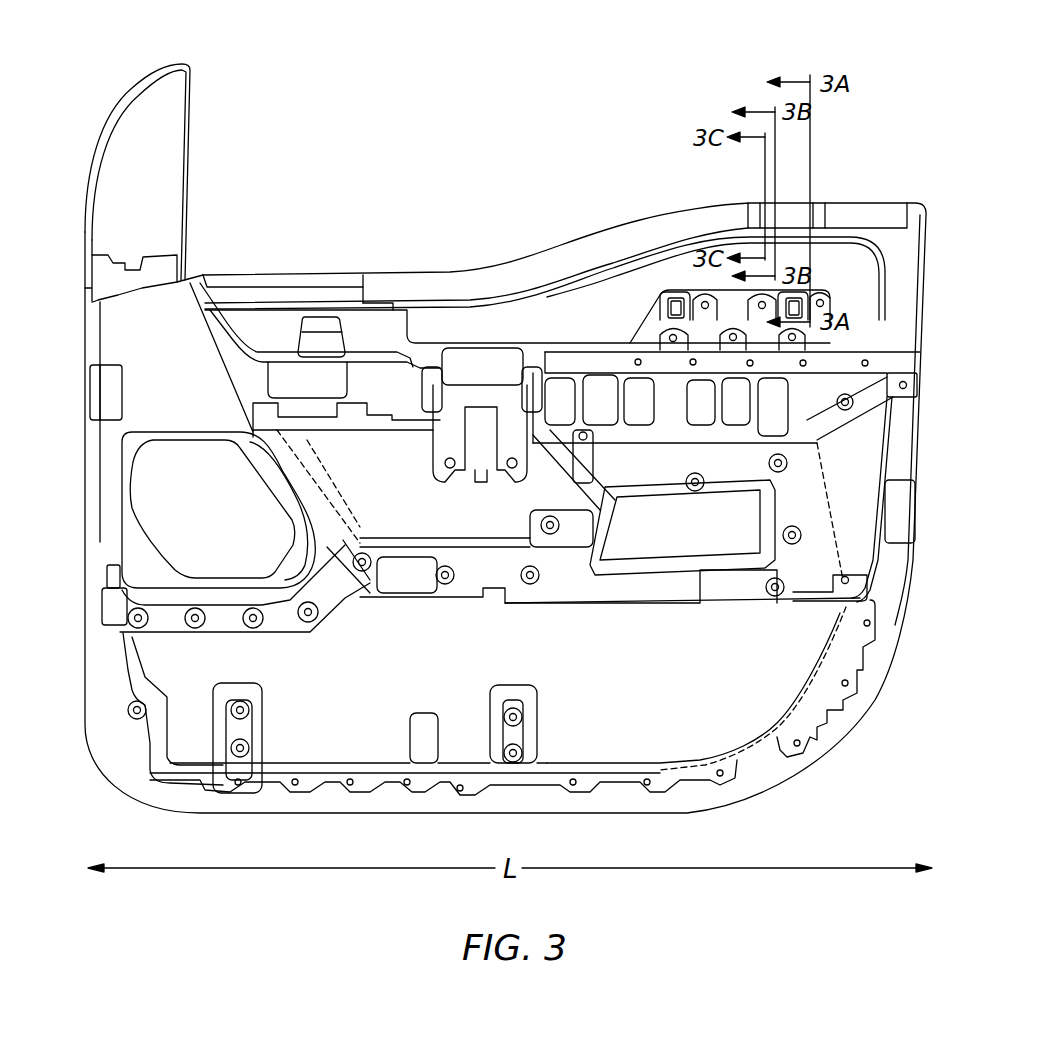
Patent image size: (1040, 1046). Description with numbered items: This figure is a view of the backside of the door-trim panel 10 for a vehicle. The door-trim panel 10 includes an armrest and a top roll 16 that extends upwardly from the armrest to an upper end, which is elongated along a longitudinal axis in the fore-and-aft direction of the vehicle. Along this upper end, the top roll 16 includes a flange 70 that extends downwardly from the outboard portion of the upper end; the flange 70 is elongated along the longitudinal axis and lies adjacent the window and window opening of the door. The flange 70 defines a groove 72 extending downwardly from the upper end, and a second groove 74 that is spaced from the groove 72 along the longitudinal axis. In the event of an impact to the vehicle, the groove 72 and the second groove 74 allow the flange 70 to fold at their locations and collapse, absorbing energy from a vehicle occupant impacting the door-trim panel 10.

The door-trim panel 10 is at (926, 95).
The top roll 16 is at (912, 262).
The flange 70 is at (583, 227).
The groove 72 is at (753, 200).
The second groove 74 is at (822, 200).